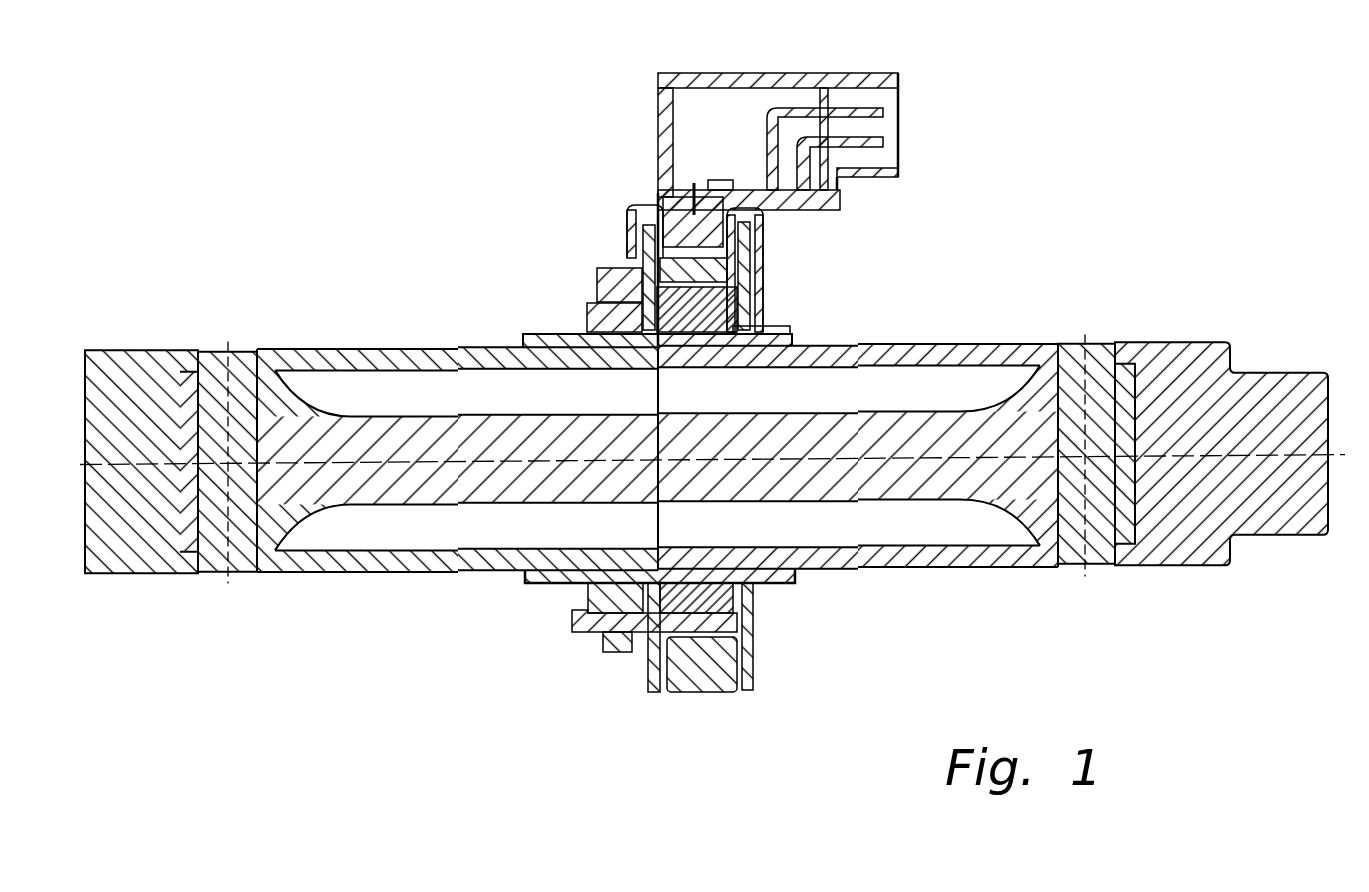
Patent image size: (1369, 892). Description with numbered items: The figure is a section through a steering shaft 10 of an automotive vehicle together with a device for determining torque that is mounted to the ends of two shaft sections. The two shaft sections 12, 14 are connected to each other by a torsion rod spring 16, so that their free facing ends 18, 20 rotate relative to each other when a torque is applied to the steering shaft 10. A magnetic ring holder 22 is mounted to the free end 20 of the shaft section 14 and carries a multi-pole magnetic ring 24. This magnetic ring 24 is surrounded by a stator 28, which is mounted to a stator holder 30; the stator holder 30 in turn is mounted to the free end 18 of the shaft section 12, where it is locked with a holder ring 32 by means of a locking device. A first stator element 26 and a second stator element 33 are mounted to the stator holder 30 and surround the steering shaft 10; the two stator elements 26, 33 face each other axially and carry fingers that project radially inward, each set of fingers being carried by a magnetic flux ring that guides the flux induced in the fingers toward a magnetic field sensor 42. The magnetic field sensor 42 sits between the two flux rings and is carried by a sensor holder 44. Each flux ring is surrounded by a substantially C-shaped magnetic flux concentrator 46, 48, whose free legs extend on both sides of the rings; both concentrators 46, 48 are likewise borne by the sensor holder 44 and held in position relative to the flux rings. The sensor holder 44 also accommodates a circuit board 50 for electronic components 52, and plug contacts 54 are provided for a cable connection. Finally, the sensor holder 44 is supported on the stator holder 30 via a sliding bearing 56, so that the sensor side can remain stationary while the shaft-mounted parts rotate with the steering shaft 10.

The steering shaft 10 is at (712, 282).
The shaft section 12 is at (220, 497).
The shaft section 14 is at (1150, 494).
The torsion rod spring 16 is at (657, 430).
The free end 18 is at (579, 301).
The free end 20 is at (766, 317).
The magnetic ring holder 22 is at (779, 298).
The multi-pole magnetic ring 24 is at (751, 609).
The first stator element 26 is at (613, 649).
The stator 28 is at (660, 702).
The stator holder 30 is at (619, 647).
The holder ring 32 is at (574, 617).
The second stator element 33 is at (750, 637).
The magnetic field sensor 42 is at (668, 243).
The sensor holder 44 is at (789, 200).
The magnetic flux concentrator 46 is at (609, 247).
The magnetic flux concentrator 48 is at (788, 270).
The circuit board 50 is at (778, 135).
The electronic components 52 is at (707, 155).
The plug contacts 54 is at (866, 146).
The sliding bearing 56 is at (592, 282).